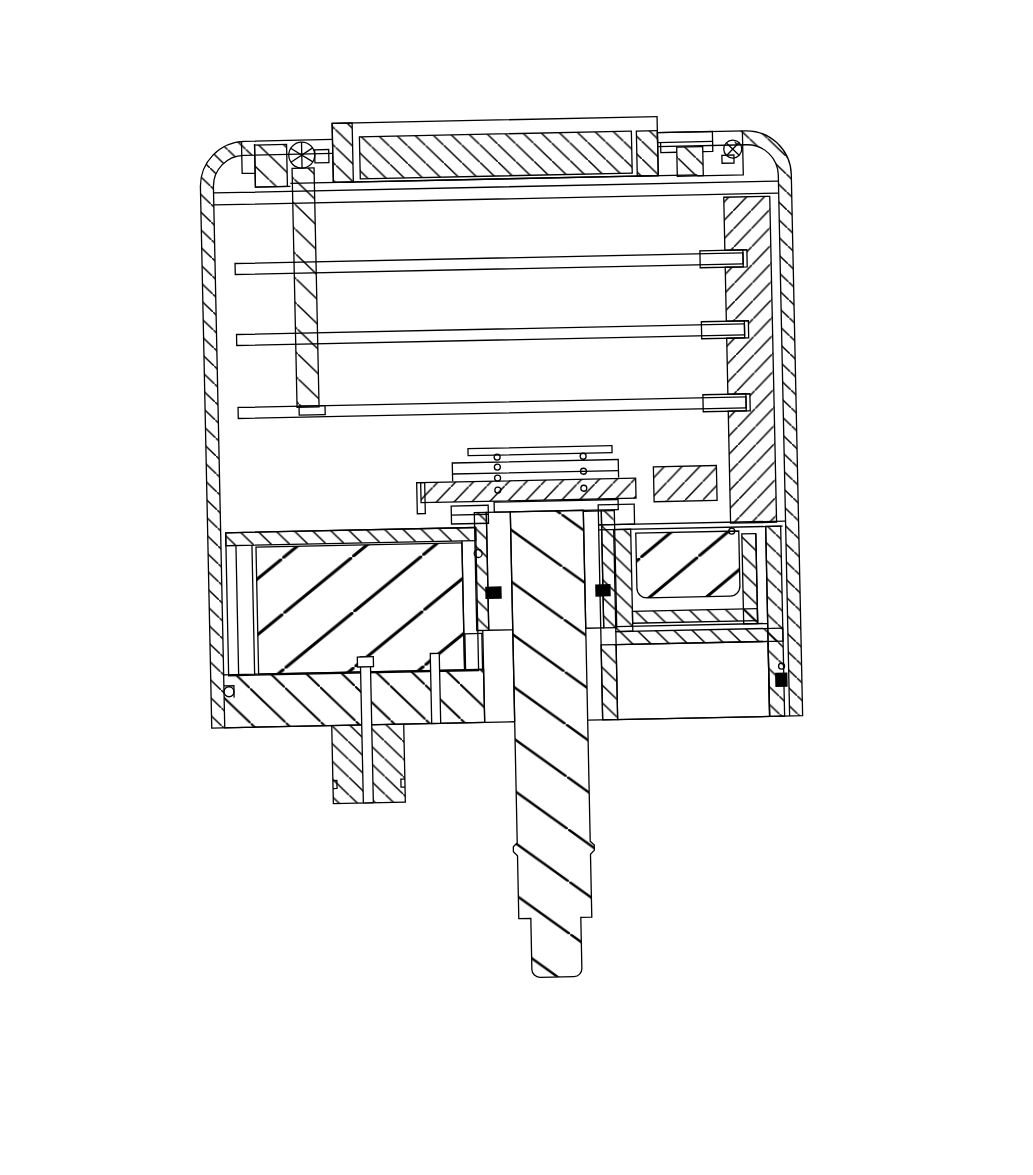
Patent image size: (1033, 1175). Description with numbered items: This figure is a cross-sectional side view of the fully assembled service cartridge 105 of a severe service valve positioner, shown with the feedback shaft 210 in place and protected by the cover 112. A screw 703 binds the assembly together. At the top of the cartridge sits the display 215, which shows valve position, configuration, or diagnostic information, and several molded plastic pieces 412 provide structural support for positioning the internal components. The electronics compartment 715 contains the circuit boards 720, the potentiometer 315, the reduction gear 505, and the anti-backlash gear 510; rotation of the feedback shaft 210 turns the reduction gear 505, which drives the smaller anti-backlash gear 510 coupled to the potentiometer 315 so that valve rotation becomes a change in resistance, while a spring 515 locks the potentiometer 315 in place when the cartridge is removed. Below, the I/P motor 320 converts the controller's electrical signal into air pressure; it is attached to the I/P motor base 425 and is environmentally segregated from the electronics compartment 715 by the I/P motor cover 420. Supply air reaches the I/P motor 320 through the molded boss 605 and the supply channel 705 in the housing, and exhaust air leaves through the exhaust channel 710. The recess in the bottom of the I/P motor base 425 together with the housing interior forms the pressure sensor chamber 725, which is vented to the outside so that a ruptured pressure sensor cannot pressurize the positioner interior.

The service cartridge 105 is at (57, 35).
The cover 112 is at (785, 180).
The feedback shaft 210 is at (592, 910).
The display 215 is at (570, 127).
The potentiometer 315 is at (787, 537).
The I/P motor 320 is at (240, 582).
The molded plastic pieces 412 is at (780, 233).
The I/P motor cover 420 is at (315, 530).
The I/P motor base 425 is at (262, 712).
The reduction gear 505 is at (417, 492).
The anti-backlash gear 510 is at (718, 462).
The spring 515 is at (485, 452).
The molded boss 605 is at (340, 750).
The screw 703 is at (283, 165).
The supply channel 705 is at (367, 803).
The exhaust channel 710 is at (433, 730).
The electronics compartment 715 is at (365, 302).
The circuit boards 720 is at (750, 398).
The pressure sensor chamber 725 is at (690, 697).